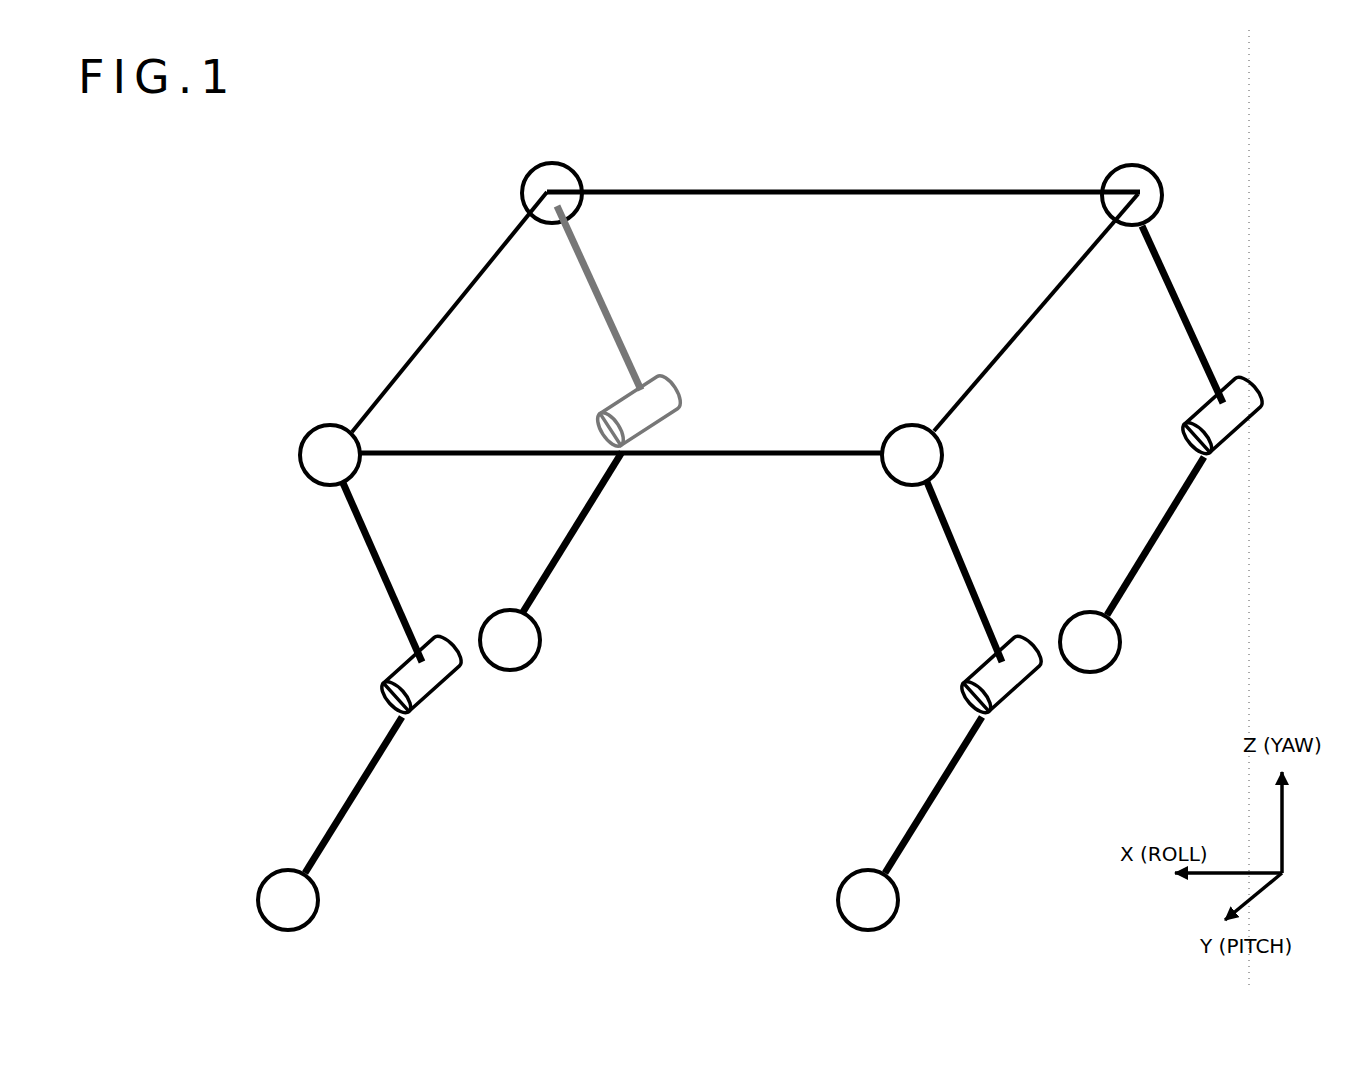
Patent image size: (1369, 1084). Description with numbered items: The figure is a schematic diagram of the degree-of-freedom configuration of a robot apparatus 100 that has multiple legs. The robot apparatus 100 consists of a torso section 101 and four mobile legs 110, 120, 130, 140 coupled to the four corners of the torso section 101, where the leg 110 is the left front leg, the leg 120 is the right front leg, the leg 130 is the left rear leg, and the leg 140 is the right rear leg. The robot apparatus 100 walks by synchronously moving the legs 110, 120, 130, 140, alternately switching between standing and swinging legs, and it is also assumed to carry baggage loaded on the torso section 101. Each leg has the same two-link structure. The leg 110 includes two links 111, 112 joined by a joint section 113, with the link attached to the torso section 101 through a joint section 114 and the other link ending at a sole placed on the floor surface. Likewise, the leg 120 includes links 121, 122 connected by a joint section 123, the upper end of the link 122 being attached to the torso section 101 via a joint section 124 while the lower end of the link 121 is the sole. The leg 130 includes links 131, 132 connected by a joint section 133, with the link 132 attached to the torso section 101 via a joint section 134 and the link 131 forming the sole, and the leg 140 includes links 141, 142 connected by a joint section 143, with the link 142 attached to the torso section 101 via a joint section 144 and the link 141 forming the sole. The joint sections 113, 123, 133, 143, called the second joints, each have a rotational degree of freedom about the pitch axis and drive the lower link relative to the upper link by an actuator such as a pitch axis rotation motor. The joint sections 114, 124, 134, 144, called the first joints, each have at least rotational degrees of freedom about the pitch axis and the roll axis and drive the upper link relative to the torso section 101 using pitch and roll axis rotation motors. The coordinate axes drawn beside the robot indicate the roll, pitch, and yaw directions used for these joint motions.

The robot apparatus 100 is at (964, 64).
The torso section 101 is at (790, 212).
The leg 110 is at (340, 688).
The link 111 is at (360, 788).
The link 112 is at (373, 567).
The joint section 113 is at (433, 691).
The joint section 114 is at (318, 452).
The leg 120 is at (683, 541).
The link 121 is at (597, 516).
The link 122 is at (590, 302).
The joint section 123 is at (651, 422).
The joint section 124 is at (538, 180).
The leg 130 is at (928, 720).
The link 131 is at (940, 790).
The link 132 is at (958, 558).
The joint section 133 is at (1015, 686).
The joint section 134 is at (928, 456).
The leg 140 is at (1158, 442).
The link 141 is at (1171, 511).
The link 142 is at (1184, 318).
The joint section 143 is at (1238, 420).
The joint section 144 is at (1143, 183).